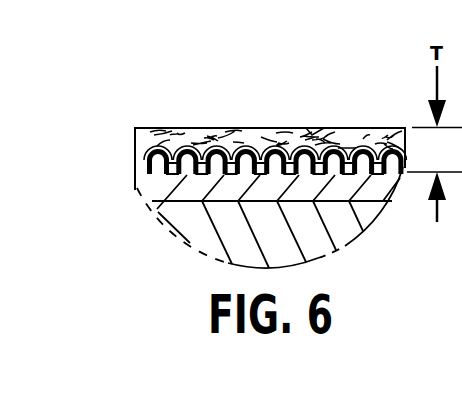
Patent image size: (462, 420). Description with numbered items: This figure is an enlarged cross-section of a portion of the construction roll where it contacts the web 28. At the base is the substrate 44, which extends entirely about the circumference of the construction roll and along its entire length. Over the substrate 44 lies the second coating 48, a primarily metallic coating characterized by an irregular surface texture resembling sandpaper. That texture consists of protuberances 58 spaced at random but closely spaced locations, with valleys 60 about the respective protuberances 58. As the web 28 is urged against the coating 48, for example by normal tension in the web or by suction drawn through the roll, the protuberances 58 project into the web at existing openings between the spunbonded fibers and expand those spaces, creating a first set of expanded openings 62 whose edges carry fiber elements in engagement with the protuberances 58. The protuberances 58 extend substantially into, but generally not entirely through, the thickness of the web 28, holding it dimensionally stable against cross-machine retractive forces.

The web 28 is at (150, 119).
The valleys 60 is at (221, 134).
The protuberances 58 is at (259, 130).
The expanded openings 62 is at (306, 122).
The second coating 48 is at (142, 184).
The substrate 44 is at (200, 230).